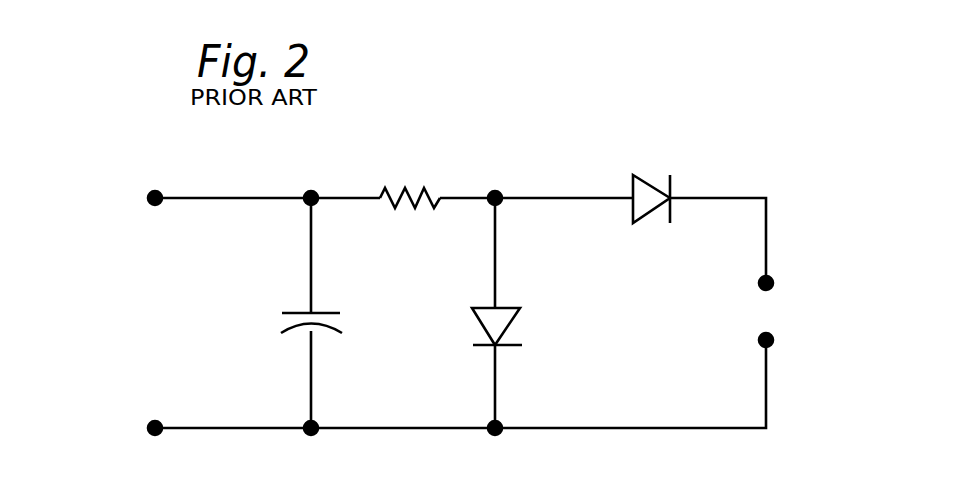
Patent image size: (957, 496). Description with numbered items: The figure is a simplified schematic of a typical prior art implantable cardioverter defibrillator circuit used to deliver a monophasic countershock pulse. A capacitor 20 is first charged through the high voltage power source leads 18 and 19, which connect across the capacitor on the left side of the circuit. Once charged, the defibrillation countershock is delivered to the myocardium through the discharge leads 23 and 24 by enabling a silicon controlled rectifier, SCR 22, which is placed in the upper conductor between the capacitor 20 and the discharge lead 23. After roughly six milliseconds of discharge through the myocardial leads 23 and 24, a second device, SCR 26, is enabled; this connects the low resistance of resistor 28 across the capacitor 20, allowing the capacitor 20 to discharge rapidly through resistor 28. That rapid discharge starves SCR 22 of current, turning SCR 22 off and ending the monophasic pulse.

The high voltage power source lead 18 is at (155, 198).
The high voltage power source lead 19 is at (155, 428).
The capacitor 20 is at (300, 313).
The silicon controlled rectifier (SCR) 22 is at (652, 183).
The discharge lead 23 is at (775, 283).
The discharge lead 24 is at (772, 343).
The SCR 26 is at (516, 313).
The resistor 28 is at (423, 188).